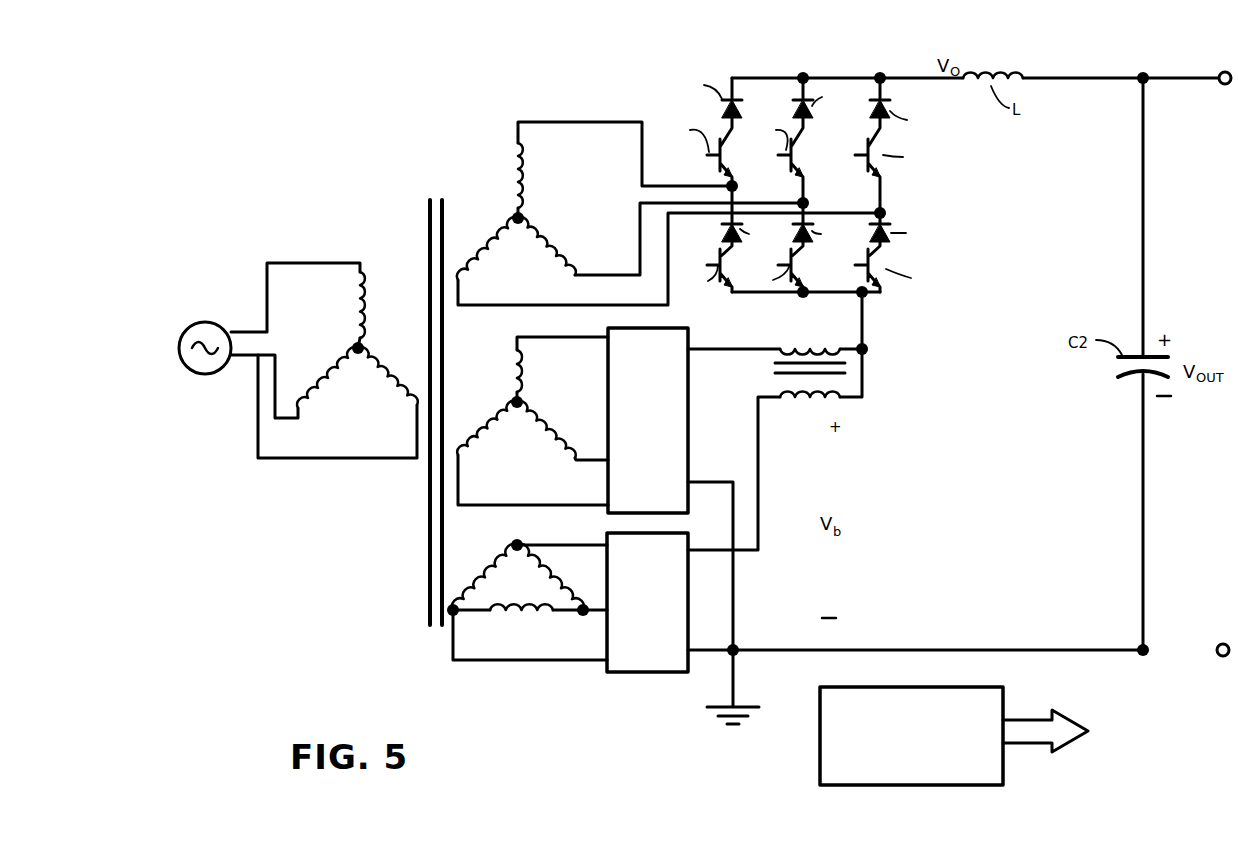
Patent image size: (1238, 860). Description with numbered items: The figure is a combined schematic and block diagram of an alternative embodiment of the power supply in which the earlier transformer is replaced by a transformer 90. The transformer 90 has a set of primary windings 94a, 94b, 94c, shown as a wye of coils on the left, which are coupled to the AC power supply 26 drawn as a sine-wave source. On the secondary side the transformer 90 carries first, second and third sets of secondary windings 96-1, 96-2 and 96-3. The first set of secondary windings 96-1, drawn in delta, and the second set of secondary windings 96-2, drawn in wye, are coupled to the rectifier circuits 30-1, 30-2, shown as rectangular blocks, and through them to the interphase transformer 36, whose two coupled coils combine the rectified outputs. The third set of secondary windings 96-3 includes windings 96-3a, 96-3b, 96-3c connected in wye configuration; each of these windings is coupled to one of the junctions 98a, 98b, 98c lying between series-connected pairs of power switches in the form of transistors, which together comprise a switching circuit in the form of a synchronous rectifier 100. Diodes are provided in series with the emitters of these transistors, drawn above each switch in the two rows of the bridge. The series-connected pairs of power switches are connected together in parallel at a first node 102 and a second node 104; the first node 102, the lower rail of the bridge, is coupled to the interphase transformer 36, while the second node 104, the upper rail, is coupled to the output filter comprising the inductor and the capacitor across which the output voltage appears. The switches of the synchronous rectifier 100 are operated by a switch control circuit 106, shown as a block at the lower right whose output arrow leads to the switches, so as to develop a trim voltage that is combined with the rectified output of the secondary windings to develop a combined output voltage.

The AC power supply 26 is at (205, 322).
The transformer 90 is at (443, 188).
The primary winding 94a is at (350, 301).
The primary winding 94b is at (386, 400).
The primary winding 94c is at (333, 364).
The first set of secondary windings 96-1 is at (540, 621).
The second set of secondary windings 96-2 is at (512, 398).
The third set of secondary windings 96-3 is at (659, 205).
The winding 96-3a is at (511, 147).
The winding 96-3b is at (548, 236).
The winding 96-3c is at (480, 266).
The junction 98a is at (739, 187).
The junction 98b is at (810, 203).
The junction 98c is at (888, 211).
The synchronous rectifier 100 is at (815, 171).
The first node 102 is at (778, 296).
The second node 104 is at (863, 57).
The switch control circuit 106 is at (820, 765).
The rectifier circuit 30-1 is at (682, 452).
The rectifier circuit 30-2 is at (663, 668).
The interphase transformer 36 is at (800, 341).